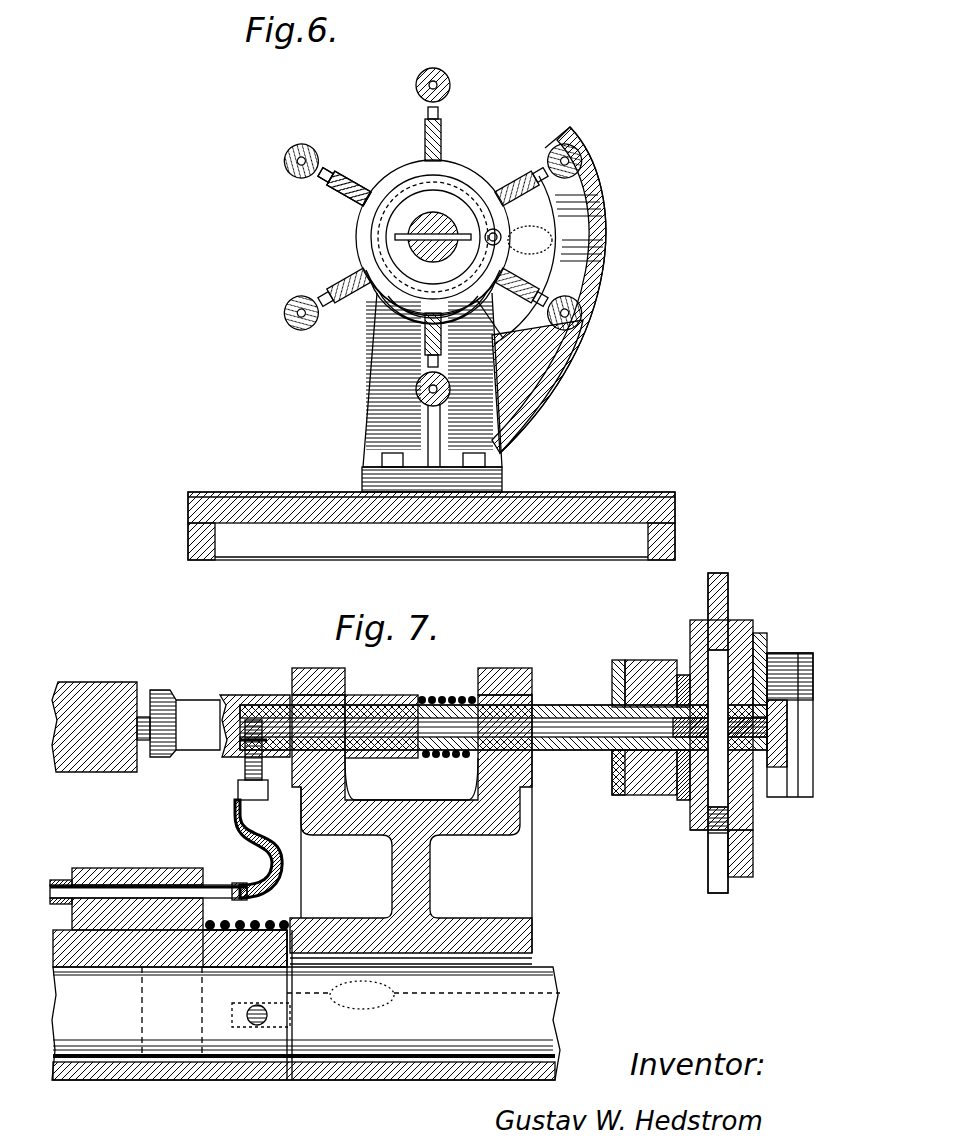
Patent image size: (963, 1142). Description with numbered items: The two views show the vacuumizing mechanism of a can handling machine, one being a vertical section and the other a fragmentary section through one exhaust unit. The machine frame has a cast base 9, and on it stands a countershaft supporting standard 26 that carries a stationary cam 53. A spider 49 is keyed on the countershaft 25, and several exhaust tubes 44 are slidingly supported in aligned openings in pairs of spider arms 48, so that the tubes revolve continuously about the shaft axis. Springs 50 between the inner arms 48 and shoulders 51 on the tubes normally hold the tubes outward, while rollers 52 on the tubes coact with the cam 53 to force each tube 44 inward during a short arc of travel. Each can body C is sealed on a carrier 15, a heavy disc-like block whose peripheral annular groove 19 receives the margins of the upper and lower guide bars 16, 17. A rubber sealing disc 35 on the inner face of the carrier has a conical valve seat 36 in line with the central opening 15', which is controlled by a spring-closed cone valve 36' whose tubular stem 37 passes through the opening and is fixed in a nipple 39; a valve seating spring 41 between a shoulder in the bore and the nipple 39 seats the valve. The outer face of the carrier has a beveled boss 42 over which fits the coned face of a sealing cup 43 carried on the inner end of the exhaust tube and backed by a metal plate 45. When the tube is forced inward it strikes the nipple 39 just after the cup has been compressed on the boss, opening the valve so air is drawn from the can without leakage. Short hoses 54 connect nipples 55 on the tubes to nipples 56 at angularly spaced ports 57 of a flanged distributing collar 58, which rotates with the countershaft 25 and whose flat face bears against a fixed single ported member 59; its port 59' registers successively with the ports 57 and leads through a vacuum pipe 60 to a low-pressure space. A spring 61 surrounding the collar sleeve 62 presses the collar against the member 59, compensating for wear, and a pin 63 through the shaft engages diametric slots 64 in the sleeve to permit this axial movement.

In FIG. 6, the cast base 9 is at (573, 505).
In FIG. 7, the can body carrier 15 is at (728, 700).
In FIG. 7, the central opening of the carrier 15' is at (691, 699).
In FIG. 7, the upper guide bar 16 is at (718, 578).
In FIG. 7, the lower guide bar 17 is at (720, 893).
In FIG. 7, the peripheral annular groove 19 is at (690, 832).
In FIG. 6, the countershaft 25 is at (452, 218).
In FIG. 7, the countershaft 25 is at (545, 1003).
In FIG. 6, the countershaft supporting standard 26 is at (385, 398).
In FIG. 7, the sealing disc 35 is at (752, 840).
In FIG. 7, the conical valve seat 36 is at (790, 744).
In FIG. 7, the cone valve 36' is at (774, 659).
In FIG. 7, the tubular valve stem 37 is at (712, 832).
In FIG. 7, the nipple 39 is at (650, 797).
In FIG. 7, the valve seating spring 41 is at (680, 806).
In FIG. 7, the central boss 42 is at (682, 668).
In FIG. 7, the sealing cup 43 is at (625, 686).
In FIG. 6, the exhaust tube 44 is at (420, 76).
In FIG. 7, the exhaust tube 44 is at (572, 750).
In FIG. 7, the metal plate 45 is at (615, 668).
In FIG. 7, the spider arm 48 is at (478, 682).
In FIG. 7, the spider 49 is at (503, 885).
In FIG. 7, the spring 50 is at (452, 758).
In FIG. 7, the shoulder 51 is at (415, 762).
In FIG. 7, the roller 52 is at (180, 722).
In FIG. 6, the stationary cam 53 is at (588, 190).
In FIG. 7, the stationary cam 53 is at (118, 690).
In FIG. 6, the hose 54 is at (340, 195).
In FIG. 7, the hose 54 is at (265, 840).
In FIG. 7, the nipple 55 is at (245, 772).
In FIG. 7, the nipple 56 is at (188, 883).
In FIG. 7, the port 57 is at (148, 897).
In FIG. 7, the flanged distributing collar 58 is at (248, 882).
In FIG. 7, the single ported member 59 is at (148, 856).
In FIG. 6, the port 59' is at (518, 240).
In FIG. 7, the port 59' is at (137, 973).
In FIG. 6, the vacuum pipe 60 is at (540, 338).
In FIG. 7, the vacuum pipe 60 is at (58, 880).
In FIG. 6, the spring 61 is at (378, 308).
In FIG. 7, the spring 61 is at (267, 920).
In FIG. 6, the sleeve 62 is at (410, 232).
In FIG. 7, the sleeve 62 is at (233, 955).
In FIG. 6, the pin 63 is at (446, 326).
In FIG. 7, the pin 63 is at (258, 1025).
In FIG. 7, the diametric slot 64 is at (423, 995).
In FIG. 7, the can body C is at (815, 800).